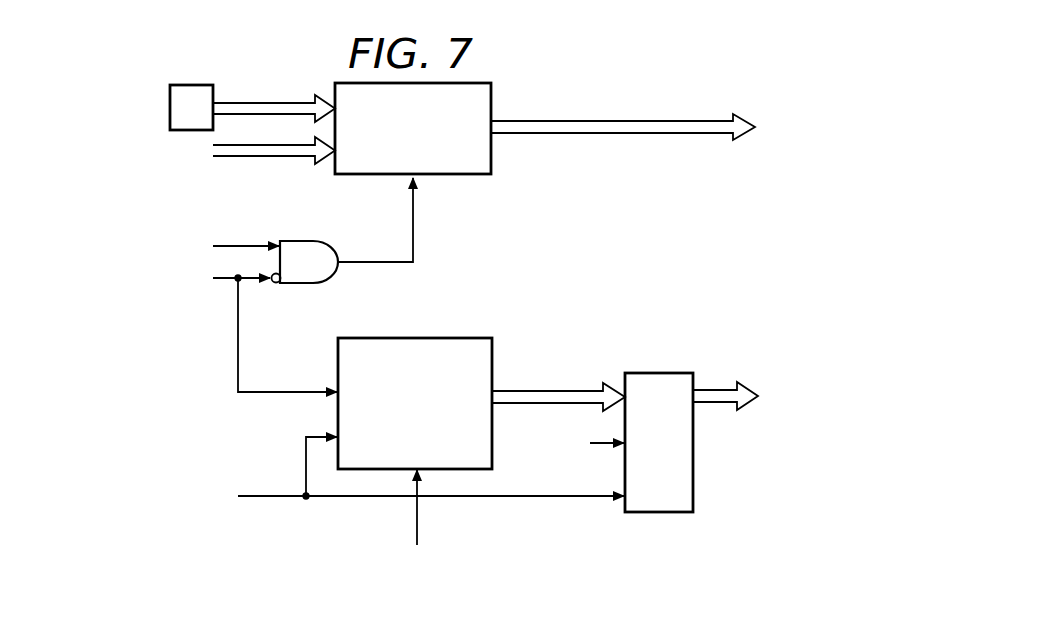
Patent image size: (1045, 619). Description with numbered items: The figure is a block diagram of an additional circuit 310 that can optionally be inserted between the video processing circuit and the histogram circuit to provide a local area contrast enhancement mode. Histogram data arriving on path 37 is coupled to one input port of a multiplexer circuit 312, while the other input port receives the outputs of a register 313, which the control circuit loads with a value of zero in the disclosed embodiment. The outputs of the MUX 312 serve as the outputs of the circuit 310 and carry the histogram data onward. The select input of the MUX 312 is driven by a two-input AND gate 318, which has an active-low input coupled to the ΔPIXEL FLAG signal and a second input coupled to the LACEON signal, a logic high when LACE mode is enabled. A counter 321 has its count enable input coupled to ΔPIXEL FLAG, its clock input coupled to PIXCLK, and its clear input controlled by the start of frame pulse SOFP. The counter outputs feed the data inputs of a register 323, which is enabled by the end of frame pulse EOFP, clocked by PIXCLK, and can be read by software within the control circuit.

The additional circuit 310 is at (652, 58).
The multiplexer circuit 312 is at (492, 104).
The register 313 is at (170, 106).
The path 37 is at (263, 159).
The two-input AND gate 318 is at (300, 286).
The counter 321 is at (494, 373).
The register 323 is at (694, 456).